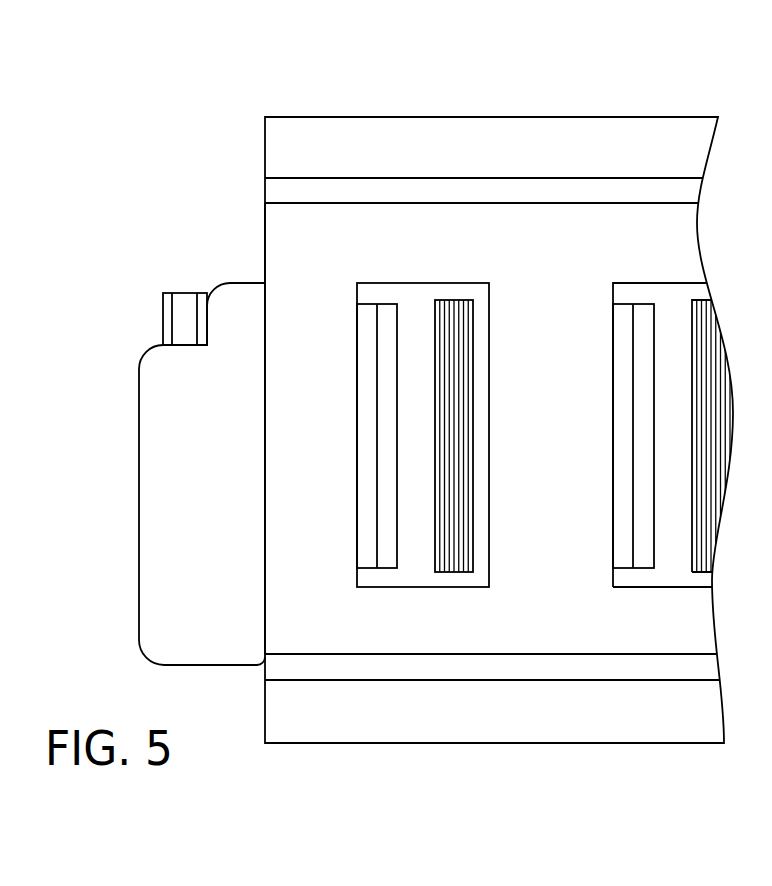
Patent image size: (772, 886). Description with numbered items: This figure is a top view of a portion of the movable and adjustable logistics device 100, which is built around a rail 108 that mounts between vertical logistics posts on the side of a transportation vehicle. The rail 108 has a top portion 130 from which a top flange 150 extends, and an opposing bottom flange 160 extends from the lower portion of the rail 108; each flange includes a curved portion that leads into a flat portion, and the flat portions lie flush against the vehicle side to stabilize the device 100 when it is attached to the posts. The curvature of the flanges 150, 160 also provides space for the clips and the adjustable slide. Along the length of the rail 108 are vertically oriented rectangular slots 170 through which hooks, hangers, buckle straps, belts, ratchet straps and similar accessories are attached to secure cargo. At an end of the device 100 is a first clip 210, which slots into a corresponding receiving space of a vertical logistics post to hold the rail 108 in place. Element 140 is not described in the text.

The movable and adjustable logistics device 100 is at (125, 200).
The rail 108 is at (562, 257).
The top portion 130 is at (517, 110).
The bottom layer 140 is at (638, 752).
The top flange 150 is at (416, 110).
The bottom flange 160 is at (525, 752).
The slots 170 is at (412, 557).
The first clip 210 is at (222, 549).